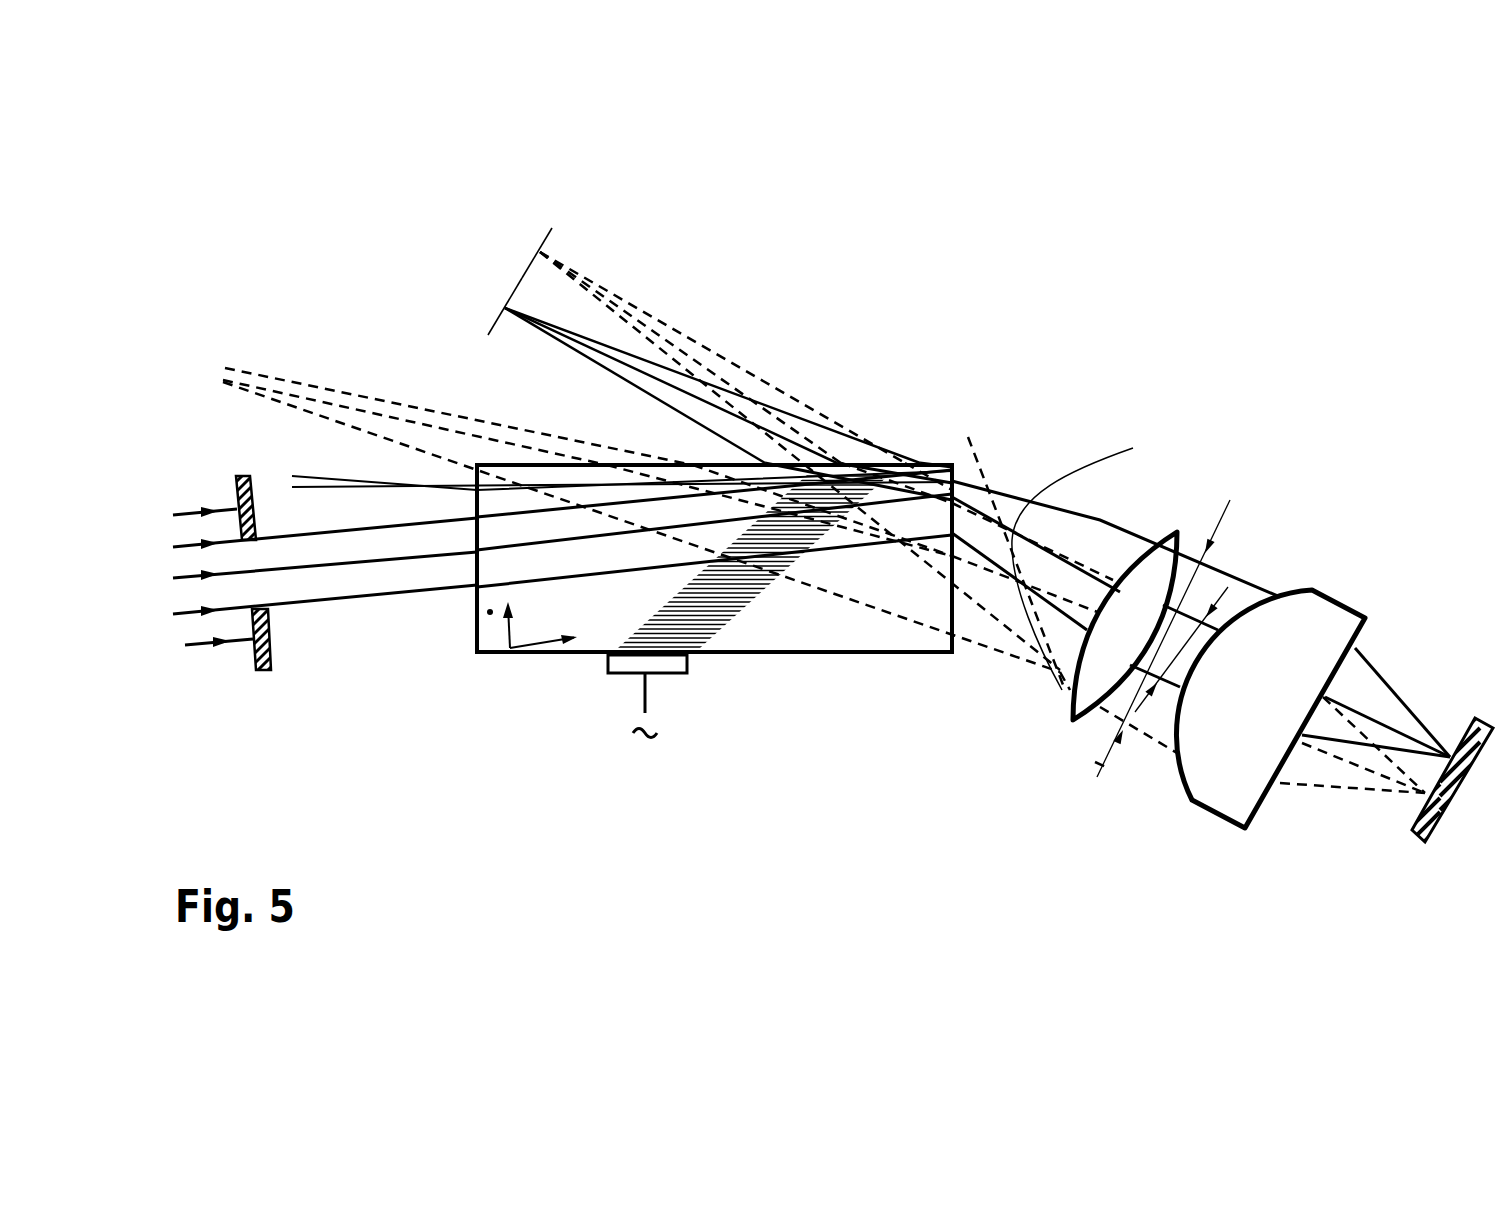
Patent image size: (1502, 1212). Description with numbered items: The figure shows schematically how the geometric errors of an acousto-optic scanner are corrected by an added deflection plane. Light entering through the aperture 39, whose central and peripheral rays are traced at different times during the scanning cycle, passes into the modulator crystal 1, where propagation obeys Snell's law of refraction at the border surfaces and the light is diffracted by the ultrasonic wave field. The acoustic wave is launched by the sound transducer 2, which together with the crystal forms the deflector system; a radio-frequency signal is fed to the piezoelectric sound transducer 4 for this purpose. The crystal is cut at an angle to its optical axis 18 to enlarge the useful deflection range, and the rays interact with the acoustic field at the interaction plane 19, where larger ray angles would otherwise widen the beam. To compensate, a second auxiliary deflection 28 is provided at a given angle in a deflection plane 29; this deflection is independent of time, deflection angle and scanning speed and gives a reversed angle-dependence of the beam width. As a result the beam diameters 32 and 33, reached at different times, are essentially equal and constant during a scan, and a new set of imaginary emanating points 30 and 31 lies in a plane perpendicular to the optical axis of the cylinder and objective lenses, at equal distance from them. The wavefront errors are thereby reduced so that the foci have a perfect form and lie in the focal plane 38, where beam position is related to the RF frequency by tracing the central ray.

The modulator crystal 1 is at (473, 617).
The sound transducer 2 is at (673, 663).
The piezoelectric sound transducer 4 is at (644, 759).
The optical axis 18 is at (513, 630).
The interaction plane 19 is at (705, 623).
The auxiliary deflection 28 is at (990, 478).
The deflection plane 29 is at (977, 449).
The imaginary emanating point 30 is at (540, 252).
The imaginary emanating point 31 is at (505, 308).
The beam diameter 32 is at (1217, 523).
The beam diameter 33 is at (1102, 760).
The focal plane 38 is at (1415, 817).
The aperture 39 is at (268, 648).